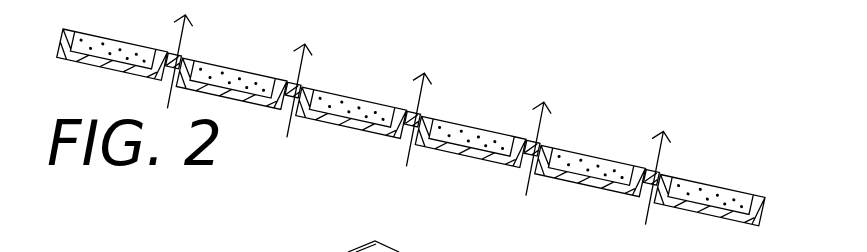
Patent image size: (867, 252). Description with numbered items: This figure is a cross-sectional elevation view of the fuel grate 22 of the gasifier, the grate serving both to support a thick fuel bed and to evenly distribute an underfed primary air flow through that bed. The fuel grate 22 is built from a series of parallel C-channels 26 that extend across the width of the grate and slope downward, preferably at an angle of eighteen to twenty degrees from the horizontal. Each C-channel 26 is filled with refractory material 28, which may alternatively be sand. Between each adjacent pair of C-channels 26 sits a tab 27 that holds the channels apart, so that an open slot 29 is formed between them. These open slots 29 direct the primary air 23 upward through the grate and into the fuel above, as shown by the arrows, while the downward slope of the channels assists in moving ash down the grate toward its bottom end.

The fuel grate 22 is at (656, 92).
The primary air 23 is at (415, 90).
The C-channel 26 is at (717, 216).
The tab 27 is at (293, 82).
The refractory material 28 is at (490, 128).
The open slot 29 is at (401, 155).